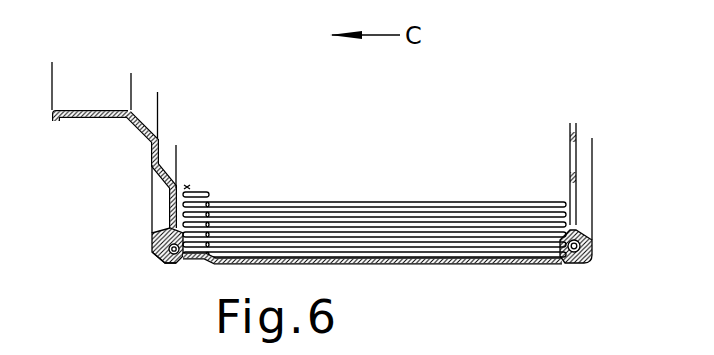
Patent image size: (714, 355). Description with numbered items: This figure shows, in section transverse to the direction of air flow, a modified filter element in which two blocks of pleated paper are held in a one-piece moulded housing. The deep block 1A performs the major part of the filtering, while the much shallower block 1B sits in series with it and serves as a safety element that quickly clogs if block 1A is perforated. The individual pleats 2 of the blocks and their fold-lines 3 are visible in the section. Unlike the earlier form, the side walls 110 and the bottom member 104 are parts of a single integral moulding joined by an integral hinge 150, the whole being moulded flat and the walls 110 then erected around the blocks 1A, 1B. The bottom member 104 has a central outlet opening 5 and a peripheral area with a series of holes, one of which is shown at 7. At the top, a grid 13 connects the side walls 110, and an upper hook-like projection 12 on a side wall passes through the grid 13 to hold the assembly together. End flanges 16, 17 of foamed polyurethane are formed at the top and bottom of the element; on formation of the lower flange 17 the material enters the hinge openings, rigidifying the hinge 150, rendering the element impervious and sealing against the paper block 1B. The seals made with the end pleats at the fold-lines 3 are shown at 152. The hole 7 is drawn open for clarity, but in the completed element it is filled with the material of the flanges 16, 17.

The block 1A is at (430, 184).
The block 1B is at (200, 185).
The pleats 2 is at (483, 215).
The fold-lines 3 is at (537, 200).
The central outlet opening 5 is at (95, 119).
The hole 7 is at (160, 256).
The upper projection 12 is at (598, 278).
The grid 13 is at (577, 135).
The end flange 16 is at (587, 238).
The end flange 17 is at (115, 277).
The bottom member 104 is at (153, 162).
The side walls 110 is at (410, 268).
The integral hinge 150 is at (170, 270).
The seals 152 is at (565, 268).